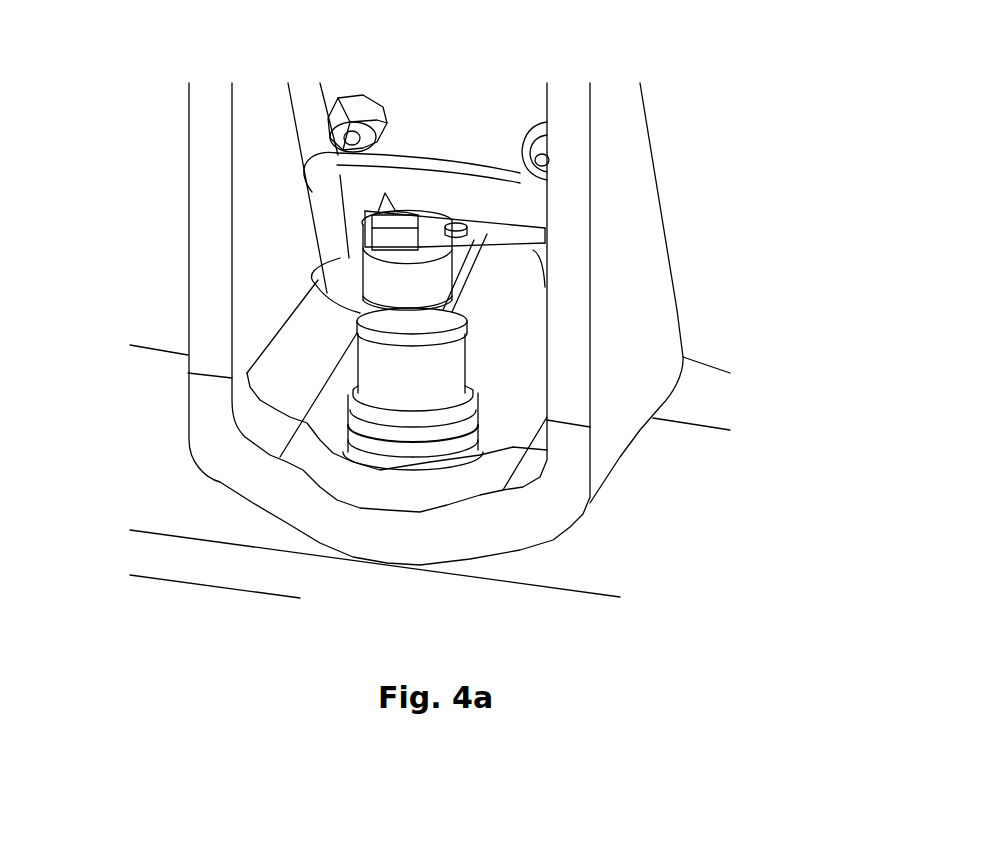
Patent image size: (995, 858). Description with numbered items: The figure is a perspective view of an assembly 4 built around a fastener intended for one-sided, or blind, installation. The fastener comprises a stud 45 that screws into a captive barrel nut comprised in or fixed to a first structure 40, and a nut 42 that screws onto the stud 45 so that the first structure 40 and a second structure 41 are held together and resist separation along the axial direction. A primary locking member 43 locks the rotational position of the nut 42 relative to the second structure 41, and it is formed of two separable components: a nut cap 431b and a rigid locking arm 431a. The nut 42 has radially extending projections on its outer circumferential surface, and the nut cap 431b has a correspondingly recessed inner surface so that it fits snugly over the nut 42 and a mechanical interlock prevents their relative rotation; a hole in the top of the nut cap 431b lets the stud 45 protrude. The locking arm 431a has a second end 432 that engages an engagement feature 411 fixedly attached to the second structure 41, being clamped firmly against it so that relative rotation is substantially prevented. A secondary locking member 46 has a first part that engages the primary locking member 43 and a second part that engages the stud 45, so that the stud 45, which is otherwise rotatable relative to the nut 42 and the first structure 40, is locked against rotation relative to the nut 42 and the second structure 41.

The assembly 4 is at (120, 163).
The first structure 40 is at (625, 541).
The second structure 41 is at (660, 360).
The nut 42 is at (353, 402).
The primary locking member 43 is at (777, 198).
The locking arm 431a is at (438, 310).
The nut cap 431b is at (438, 358).
The second end 432 is at (490, 240).
The engagement feature 411 is at (487, 233).
The stud 45 is at (453, 226).
The secondary locking member 46 is at (380, 277).